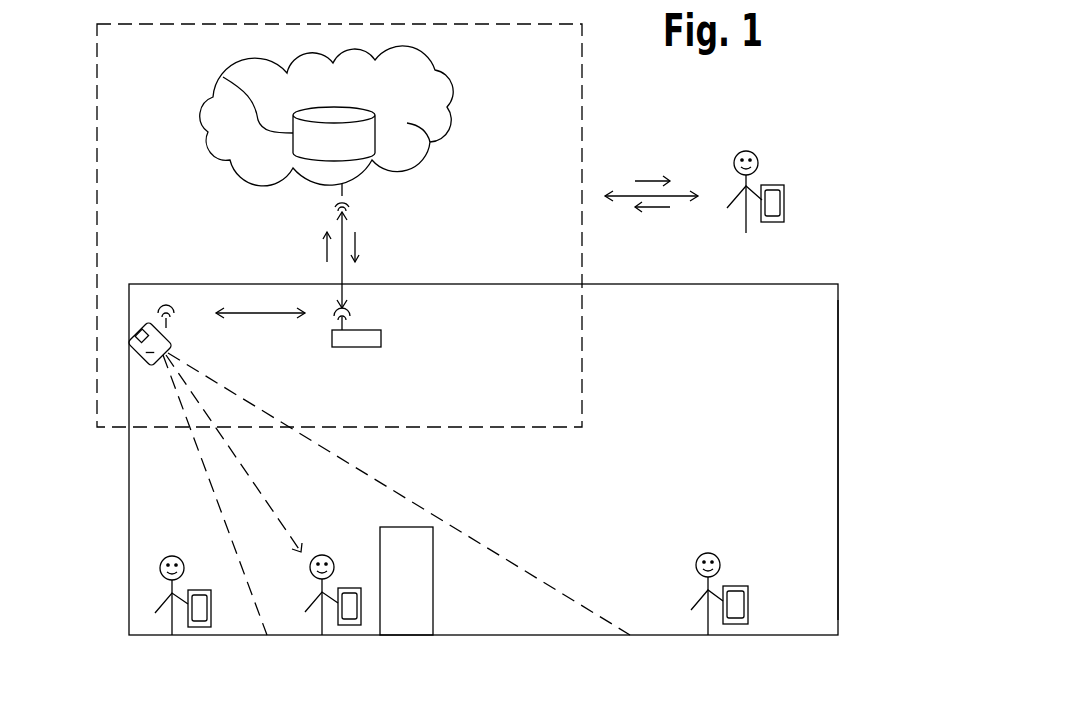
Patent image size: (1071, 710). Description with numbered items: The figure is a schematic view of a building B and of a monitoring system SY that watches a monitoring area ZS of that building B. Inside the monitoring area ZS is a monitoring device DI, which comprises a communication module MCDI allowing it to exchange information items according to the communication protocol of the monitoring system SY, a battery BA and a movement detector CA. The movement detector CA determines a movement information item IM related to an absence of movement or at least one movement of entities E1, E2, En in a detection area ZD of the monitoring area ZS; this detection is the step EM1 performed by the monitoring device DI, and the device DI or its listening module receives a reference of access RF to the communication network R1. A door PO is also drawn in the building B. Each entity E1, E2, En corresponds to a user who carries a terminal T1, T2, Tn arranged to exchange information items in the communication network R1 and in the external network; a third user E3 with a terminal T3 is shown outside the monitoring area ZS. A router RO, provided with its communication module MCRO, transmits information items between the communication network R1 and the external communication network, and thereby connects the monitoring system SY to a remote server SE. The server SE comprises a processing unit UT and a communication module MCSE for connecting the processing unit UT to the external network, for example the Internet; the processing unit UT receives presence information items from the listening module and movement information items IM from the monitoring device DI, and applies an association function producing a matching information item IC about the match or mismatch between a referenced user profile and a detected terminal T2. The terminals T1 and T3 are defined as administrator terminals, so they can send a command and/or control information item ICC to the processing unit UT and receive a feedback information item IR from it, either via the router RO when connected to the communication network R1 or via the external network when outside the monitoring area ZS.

The monitoring system SY is at (583, 355).
The building B is at (823, 298).
The monitoring area ZS is at (838, 372).
The server SE is at (465, 118).
The processing unit UT is at (223, 77).
The matching information item IC is at (334, 134).
The communication module MCSE is at (358, 182).
The movement information item IM is at (328, 253).
The router RO is at (383, 340).
The router communication module MCRO is at (360, 318).
The communication module MCDI is at (168, 325).
The monitoring device DI is at (143, 318).
The communication network R1 is at (173, 293).
The battery BA is at (138, 330).
The reference of access RF is at (142, 352).
The movement detector CA is at (162, 360).
The detection area ZD is at (533, 575).
The step of detecting movement EM1 is at (273, 508).
The door PO is at (433, 565).
The entity E1 is at (172, 555).
The terminal T1 is at (200, 628).
The entity E2 is at (322, 620).
The terminal T2 is at (350, 628).
The entity En is at (705, 550).
The terminal Tn is at (740, 586).
The entity E3 is at (746, 150).
The terminal T3 is at (775, 185).
The feedback information item IR is at (651, 172).
The command and/or control information item ICC is at (650, 224).